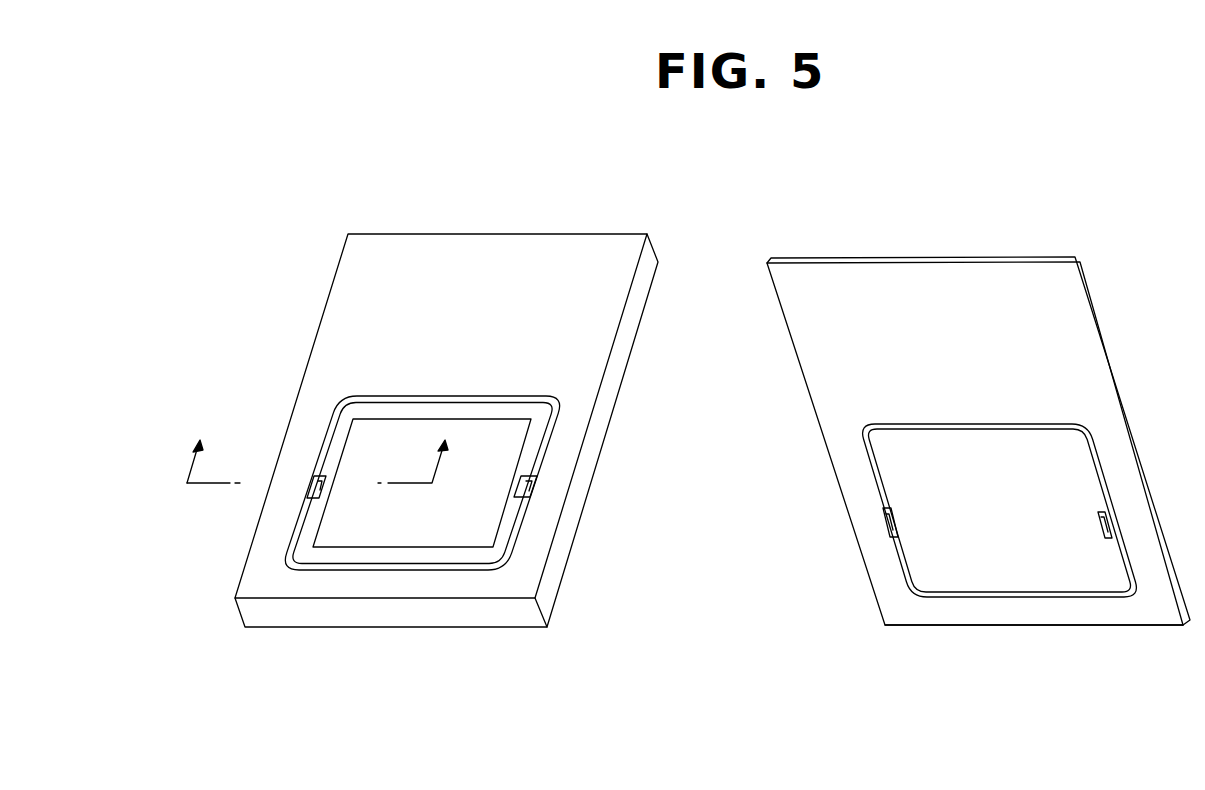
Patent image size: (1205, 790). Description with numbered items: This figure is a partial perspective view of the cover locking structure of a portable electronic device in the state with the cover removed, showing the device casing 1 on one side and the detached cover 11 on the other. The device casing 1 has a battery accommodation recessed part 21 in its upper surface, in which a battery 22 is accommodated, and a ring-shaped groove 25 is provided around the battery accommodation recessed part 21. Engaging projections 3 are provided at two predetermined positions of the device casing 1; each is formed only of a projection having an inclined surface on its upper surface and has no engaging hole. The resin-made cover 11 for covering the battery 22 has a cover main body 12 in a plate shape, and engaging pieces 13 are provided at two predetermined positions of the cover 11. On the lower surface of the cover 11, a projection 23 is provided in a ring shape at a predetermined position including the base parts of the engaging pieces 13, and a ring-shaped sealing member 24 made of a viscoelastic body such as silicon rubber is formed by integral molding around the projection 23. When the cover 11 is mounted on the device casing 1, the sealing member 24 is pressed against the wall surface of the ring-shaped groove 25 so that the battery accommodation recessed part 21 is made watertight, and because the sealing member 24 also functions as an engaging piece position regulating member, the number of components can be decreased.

The device casing 1 is at (558, 235).
The engaging projection 3 is at (314, 487).
The cover 11 is at (1037, 256).
The cover main body 12 is at (1123, 623).
The engaging piece 13 is at (883, 533).
The battery accommodation recessed part 21 is at (422, 553).
The battery 22 is at (443, 537).
The projection 23 is at (1022, 598).
The sealing member 24 is at (1000, 548).
The ring-shaped groove 25 is at (462, 395).